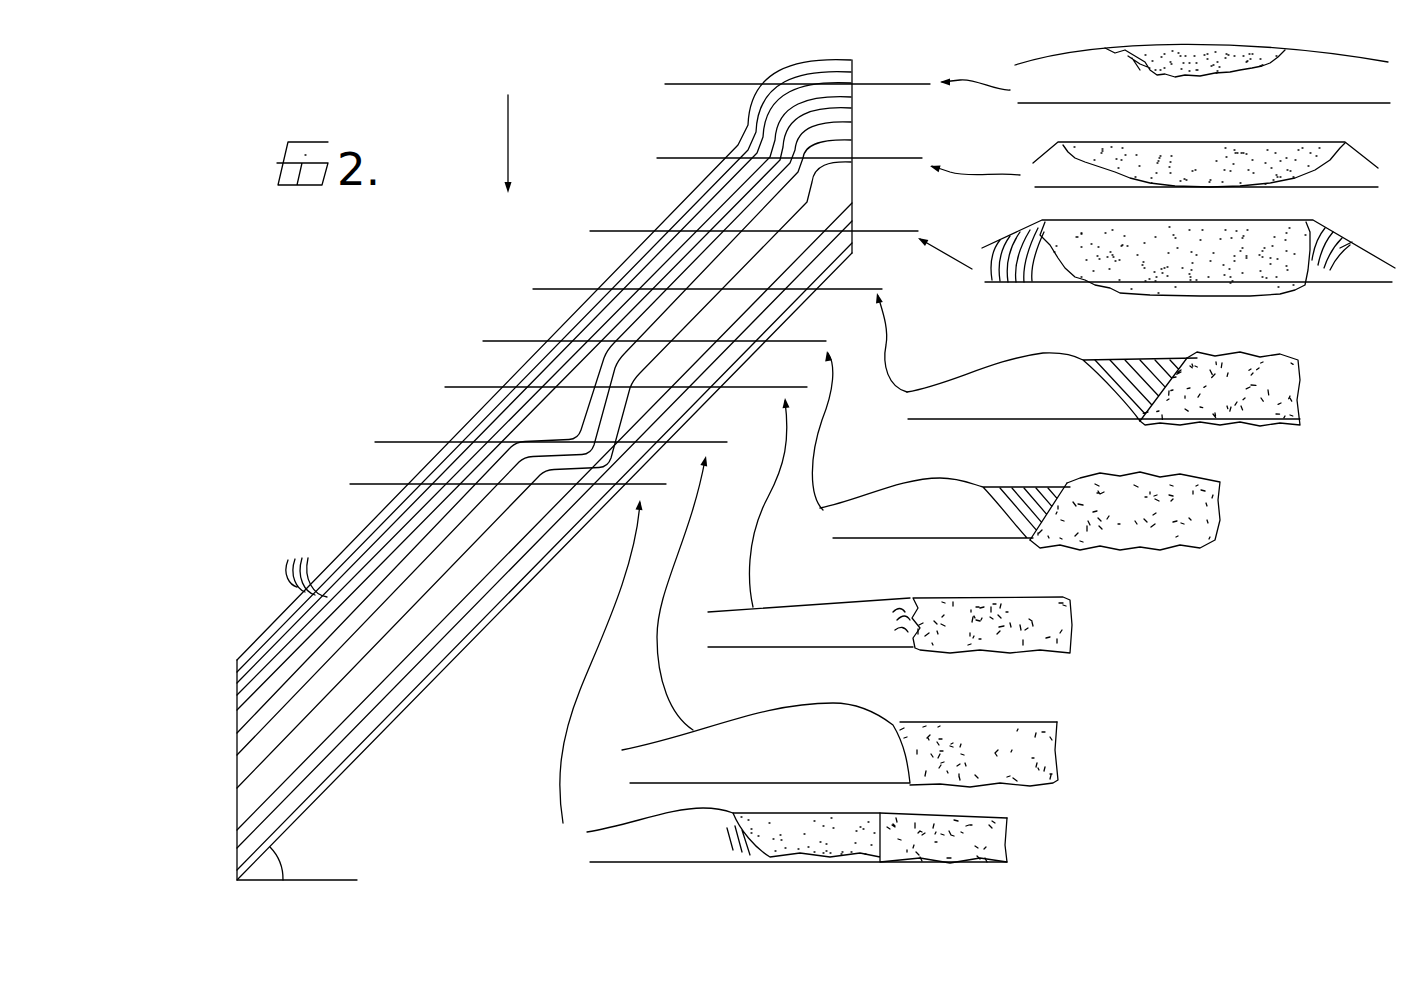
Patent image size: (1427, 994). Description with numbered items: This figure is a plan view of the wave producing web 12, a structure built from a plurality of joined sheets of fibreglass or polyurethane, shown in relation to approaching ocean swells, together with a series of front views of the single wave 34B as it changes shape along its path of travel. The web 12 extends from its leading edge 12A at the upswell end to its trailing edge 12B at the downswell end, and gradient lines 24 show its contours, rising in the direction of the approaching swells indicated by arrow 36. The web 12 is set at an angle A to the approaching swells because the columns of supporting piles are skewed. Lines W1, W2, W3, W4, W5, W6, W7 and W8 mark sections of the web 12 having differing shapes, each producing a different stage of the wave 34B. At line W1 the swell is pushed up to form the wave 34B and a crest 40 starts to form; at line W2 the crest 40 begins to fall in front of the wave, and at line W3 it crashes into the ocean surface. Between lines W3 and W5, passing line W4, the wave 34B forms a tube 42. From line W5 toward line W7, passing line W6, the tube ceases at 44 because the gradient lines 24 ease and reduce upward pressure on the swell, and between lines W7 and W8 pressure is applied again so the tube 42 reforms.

The web 12 is at (532, 470).
The leading edge 12A is at (345, 543).
The trailing edge 12B is at (343, 772).
The gradient lines 24 is at (302, 566).
The arrow 36 is at (507, 143).
The crest 40 is at (1160, 68).
The tube 42 is at (1097, 375).
The tube cessation location 44 is at (908, 617).
The wave 34B is at (991, 456).
The line W1 is at (837, 74).
The line W2 is at (838, 152).
The line W3 is at (781, 234).
The line W4 is at (720, 327).
The line W5 is at (658, 412).
The line W6 is at (626, 483).
The line W7 is at (551, 572).
The line W8 is at (508, 640).
The angle A is at (288, 860).